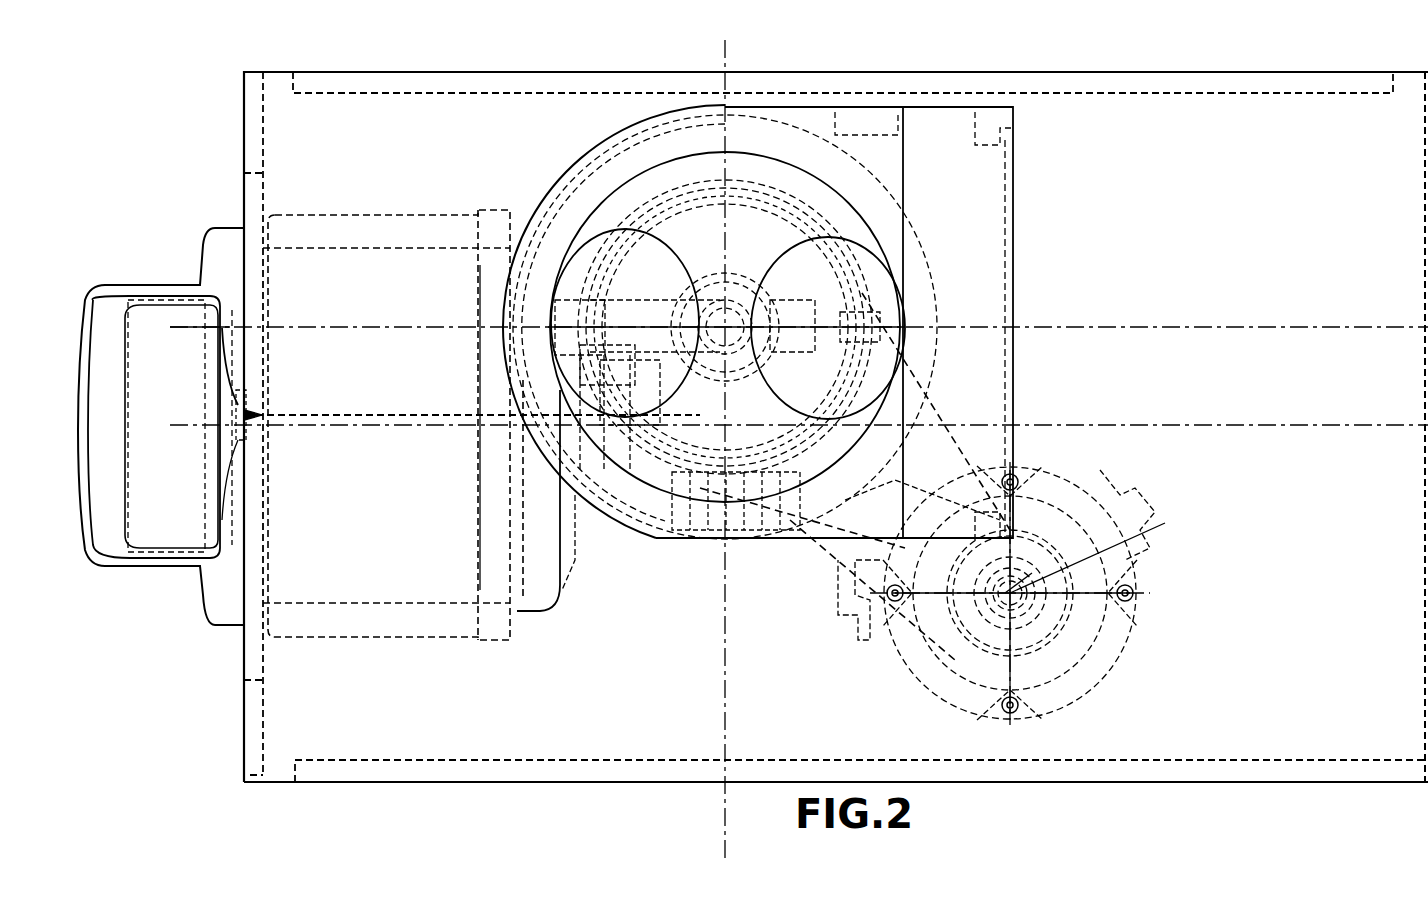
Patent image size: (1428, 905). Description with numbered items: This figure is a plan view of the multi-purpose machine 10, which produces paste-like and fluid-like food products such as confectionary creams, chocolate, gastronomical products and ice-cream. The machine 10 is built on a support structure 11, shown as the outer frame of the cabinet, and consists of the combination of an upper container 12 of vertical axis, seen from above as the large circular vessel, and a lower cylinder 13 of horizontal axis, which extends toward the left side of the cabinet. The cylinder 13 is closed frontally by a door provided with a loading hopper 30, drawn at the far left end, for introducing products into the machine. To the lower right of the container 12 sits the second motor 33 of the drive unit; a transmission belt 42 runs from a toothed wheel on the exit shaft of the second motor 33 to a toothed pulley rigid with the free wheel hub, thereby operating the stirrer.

The multi-purpose machine 10 is at (1061, 68).
The support structure 11 is at (503, 770).
The upper container 12 is at (755, 236).
The lower cylinder 13 is at (373, 585).
The loading hopper 30 is at (120, 322).
The second motor 33 is at (935, 640).
The transmission belt 42 is at (950, 442).